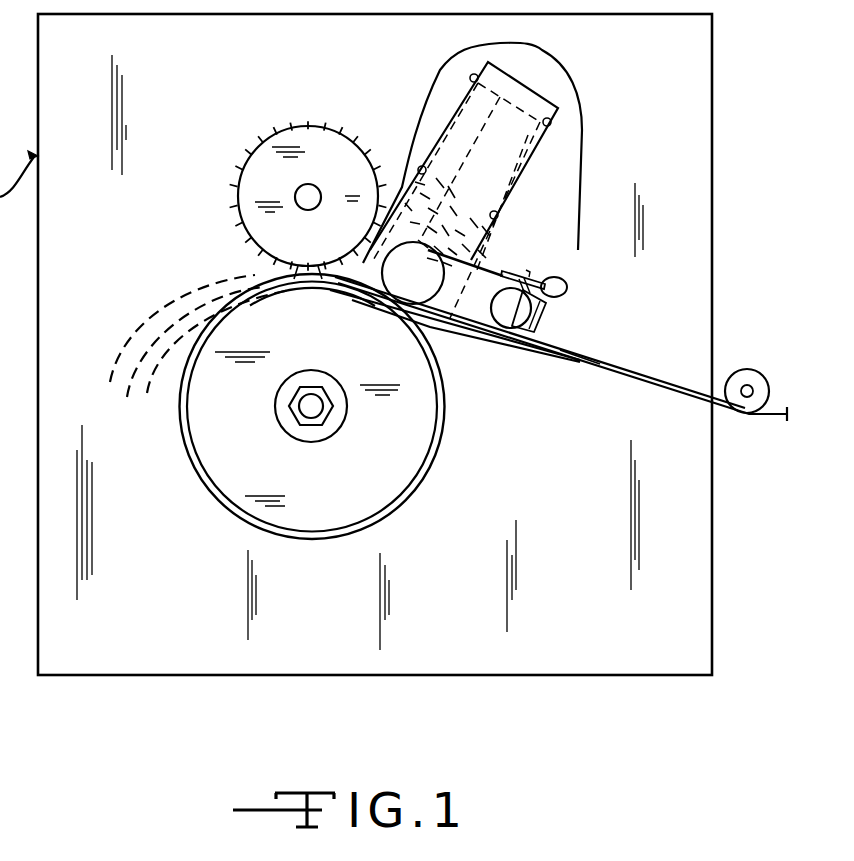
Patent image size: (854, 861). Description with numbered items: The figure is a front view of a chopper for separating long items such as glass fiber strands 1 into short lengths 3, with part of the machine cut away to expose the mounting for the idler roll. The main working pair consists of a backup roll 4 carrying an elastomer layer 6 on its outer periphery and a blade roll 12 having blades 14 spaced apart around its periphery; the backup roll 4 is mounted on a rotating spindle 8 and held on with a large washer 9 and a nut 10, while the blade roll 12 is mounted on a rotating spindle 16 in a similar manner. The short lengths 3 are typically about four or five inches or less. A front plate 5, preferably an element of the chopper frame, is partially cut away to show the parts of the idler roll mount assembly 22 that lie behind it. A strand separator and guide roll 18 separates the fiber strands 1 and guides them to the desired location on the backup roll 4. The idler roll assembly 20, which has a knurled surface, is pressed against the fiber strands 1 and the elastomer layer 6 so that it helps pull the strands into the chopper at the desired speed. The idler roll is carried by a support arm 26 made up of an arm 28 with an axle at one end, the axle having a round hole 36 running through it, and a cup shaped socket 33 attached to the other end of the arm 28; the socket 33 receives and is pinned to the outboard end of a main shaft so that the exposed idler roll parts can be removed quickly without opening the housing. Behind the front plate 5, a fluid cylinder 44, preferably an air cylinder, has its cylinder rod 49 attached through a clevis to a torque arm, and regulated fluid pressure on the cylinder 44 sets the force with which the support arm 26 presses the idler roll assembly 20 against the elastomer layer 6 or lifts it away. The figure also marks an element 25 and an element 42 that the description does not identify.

The fiber strands 1 is at (776, 416).
The short lengths 3 is at (150, 318).
The backup roll 4 is at (212, 435).
The front plate 5 is at (682, 210).
The elastomer layer 6 is at (207, 485).
The rotating spindle 8 is at (312, 412).
The large washer 9 is at (335, 422).
The nut 10 is at (292, 425).
The blade roll 12 is at (278, 140).
The blades 14 is at (237, 198).
The rotating spindle 16 is at (318, 203).
The strand separator and guide roll 18 is at (747, 380).
The idler roll assembly 20 is at (385, 296).
The idler roll mount assembly 22 is at (537, 166).
The roller 25 is at (538, 313).
The support arm 26 is at (489, 332).
The arm 28 is at (455, 333).
The socket 33 is at (577, 358).
The round hole 36 is at (568, 290).
The mounting plate 42 is at (550, 92).
The fluid cylinder 44 is at (513, 138).
The cylinder rod 49 is at (450, 210).